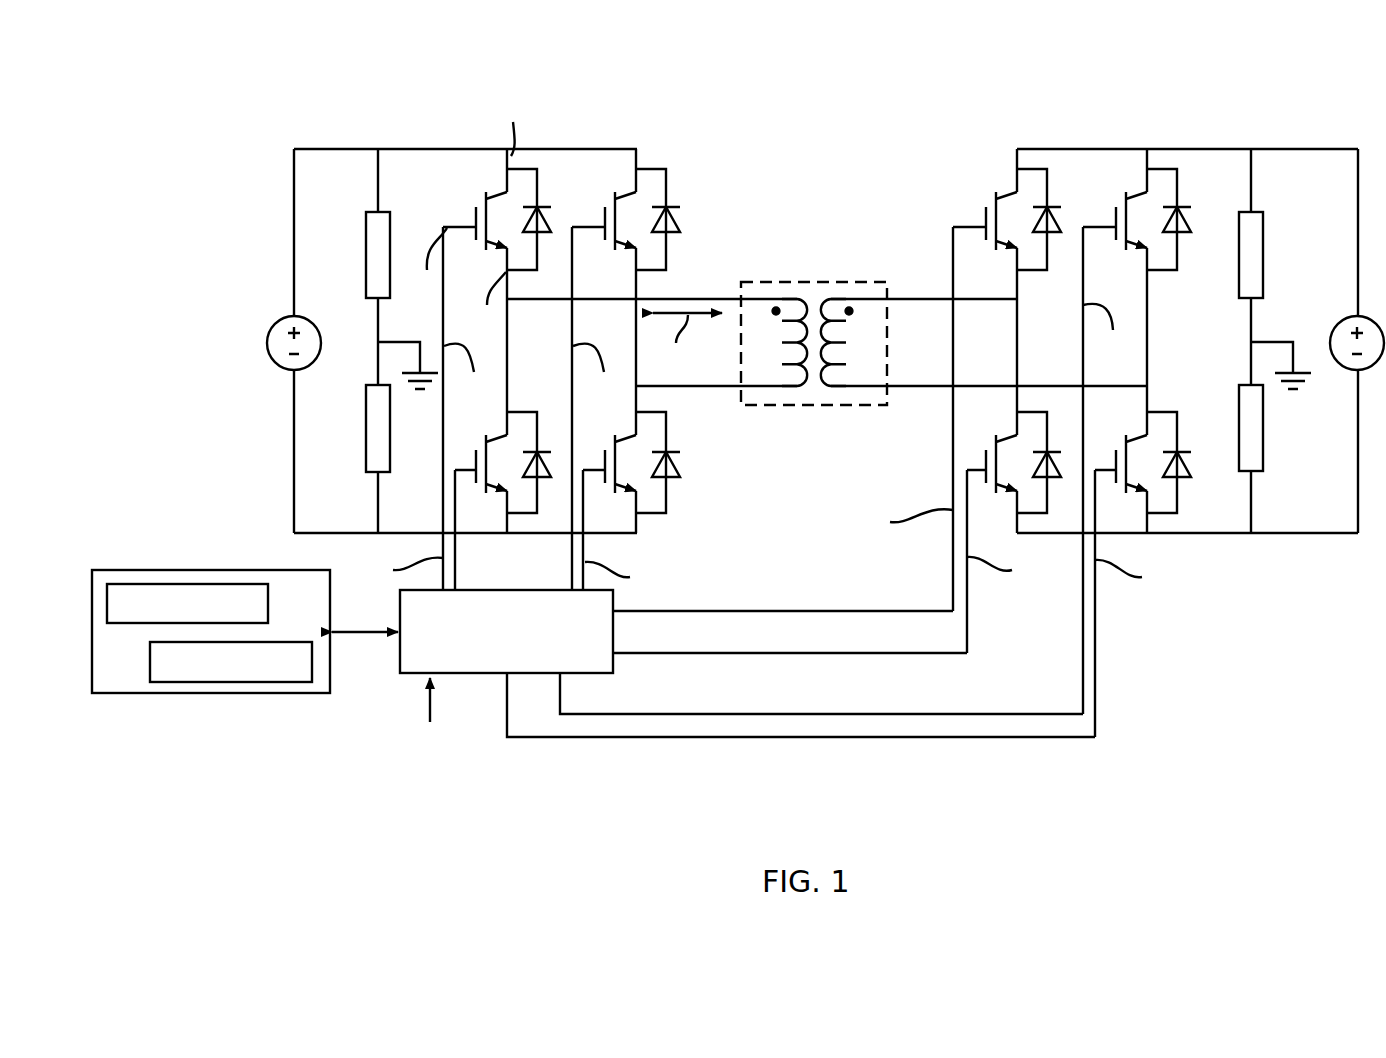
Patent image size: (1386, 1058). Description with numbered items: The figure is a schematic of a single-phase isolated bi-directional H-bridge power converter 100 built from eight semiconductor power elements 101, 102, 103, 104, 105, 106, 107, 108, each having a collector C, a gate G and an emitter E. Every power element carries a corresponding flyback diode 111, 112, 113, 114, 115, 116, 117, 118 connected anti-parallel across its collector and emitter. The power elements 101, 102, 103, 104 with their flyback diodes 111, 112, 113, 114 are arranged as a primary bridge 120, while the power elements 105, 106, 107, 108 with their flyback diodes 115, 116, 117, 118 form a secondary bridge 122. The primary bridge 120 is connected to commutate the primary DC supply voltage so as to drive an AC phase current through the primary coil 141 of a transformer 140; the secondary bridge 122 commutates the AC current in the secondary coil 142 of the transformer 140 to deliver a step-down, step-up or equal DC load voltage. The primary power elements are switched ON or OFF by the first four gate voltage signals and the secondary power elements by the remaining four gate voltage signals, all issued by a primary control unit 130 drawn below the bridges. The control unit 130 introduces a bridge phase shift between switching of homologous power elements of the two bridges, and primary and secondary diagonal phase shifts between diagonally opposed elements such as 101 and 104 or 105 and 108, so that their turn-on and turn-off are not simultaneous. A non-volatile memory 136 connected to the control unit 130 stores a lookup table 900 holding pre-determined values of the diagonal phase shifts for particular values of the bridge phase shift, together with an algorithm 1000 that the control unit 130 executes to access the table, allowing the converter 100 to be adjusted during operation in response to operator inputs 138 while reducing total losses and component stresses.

The isolated bi-directional H-bridge power converter 100 is at (873, 108).
The semiconductor power element 101 is at (472, 210).
The semiconductor power element 102 is at (475, 462).
The semiconductor power element 103 is at (603, 218).
The semiconductor power element 104 is at (602, 462).
The semiconductor power element 105 is at (984, 212).
The semiconductor power element 106 is at (985, 456).
The semiconductor power element 107 is at (1114, 212).
The semiconductor power element 108 is at (1115, 456).
The flyback diode 111 is at (538, 207).
The flyback diode 112 is at (553, 462).
The flyback diode 113 is at (677, 218).
The flyback diode 114 is at (672, 458).
The flyback diode 115 is at (1055, 220).
The flyback diode 116 is at (1055, 458).
The flyback diode 117 is at (1185, 220).
The flyback diode 118 is at (1185, 458).
The primary bridge 120 is at (447, 136).
The secondary bridge 122 is at (1157, 137).
The control unit 130 is at (512, 590).
The non-volatile memory 136 is at (125, 570).
The operator input 138 is at (434, 715).
The transformer 140 is at (800, 278).
The primary coil 141 is at (800, 388).
The secondary coil 142 is at (845, 388).
The lookup table 900 is at (190, 584).
The algorithm 1000 is at (223, 683).